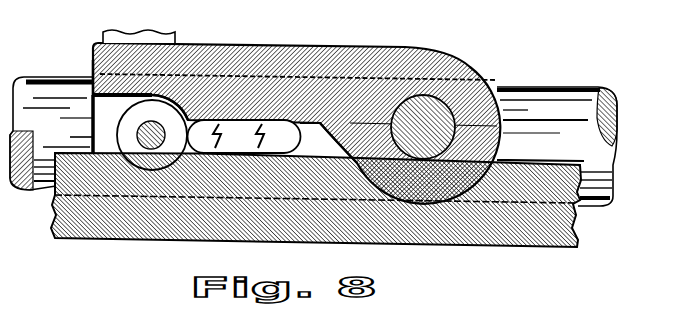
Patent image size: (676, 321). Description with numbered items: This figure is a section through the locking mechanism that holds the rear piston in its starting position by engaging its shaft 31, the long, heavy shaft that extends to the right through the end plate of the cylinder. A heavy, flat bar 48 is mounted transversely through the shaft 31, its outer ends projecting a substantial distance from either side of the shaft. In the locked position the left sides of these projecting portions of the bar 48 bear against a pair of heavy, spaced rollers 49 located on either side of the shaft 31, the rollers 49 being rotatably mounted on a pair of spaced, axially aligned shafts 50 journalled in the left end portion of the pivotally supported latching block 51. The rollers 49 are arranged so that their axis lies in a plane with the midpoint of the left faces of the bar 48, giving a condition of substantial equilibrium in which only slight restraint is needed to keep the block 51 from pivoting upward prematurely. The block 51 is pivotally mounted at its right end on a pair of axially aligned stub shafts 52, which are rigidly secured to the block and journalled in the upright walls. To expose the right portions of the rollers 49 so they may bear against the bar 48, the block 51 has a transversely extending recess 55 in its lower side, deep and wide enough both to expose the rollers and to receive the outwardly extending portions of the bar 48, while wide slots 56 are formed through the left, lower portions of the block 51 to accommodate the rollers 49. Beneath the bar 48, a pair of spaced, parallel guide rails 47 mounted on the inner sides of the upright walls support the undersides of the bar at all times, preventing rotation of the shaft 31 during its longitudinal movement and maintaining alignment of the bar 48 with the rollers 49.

The shaft 31 is at (541, 114).
The guide rails 47 is at (158, 240).
The flat bar 48 is at (254, 156).
The rollers 49 is at (129, 120).
The shafts 50 is at (146, 134).
The latching block 51 is at (457, 60).
The stub shafts 52 is at (546, 143).
The recess 55 is at (340, 142).
The slots 56 is at (93, 98).